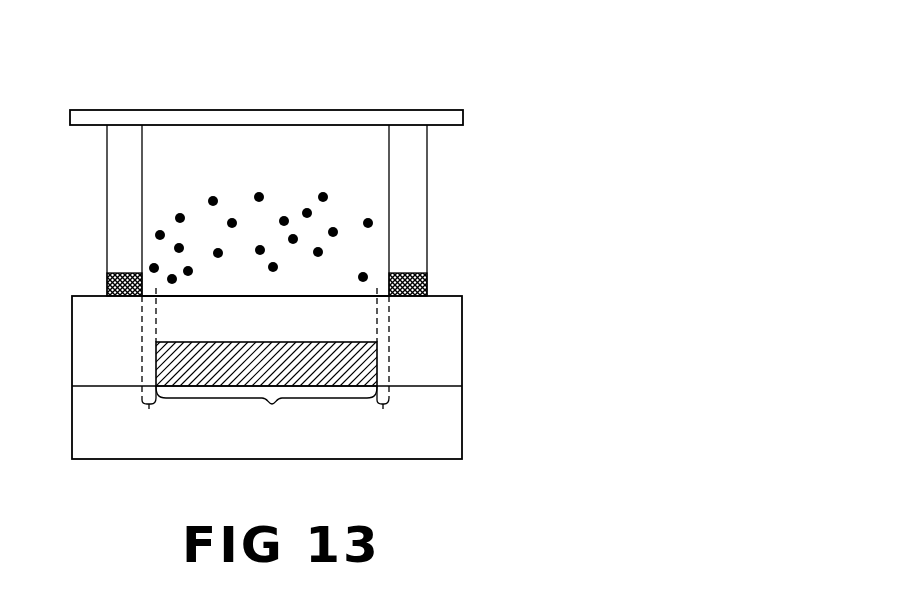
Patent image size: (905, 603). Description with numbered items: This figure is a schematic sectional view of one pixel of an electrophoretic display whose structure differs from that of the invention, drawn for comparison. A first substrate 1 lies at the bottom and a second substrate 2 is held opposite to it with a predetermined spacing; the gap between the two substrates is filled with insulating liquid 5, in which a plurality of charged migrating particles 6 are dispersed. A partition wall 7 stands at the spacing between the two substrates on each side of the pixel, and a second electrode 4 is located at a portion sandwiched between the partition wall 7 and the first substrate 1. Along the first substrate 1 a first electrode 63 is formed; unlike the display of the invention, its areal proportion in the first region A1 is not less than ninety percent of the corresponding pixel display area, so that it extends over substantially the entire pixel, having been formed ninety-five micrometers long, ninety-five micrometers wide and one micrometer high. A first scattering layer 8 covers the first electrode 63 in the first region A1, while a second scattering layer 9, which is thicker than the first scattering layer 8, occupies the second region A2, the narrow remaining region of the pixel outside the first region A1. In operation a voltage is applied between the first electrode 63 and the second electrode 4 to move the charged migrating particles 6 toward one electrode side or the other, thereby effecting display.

The first substrate 1 is at (457, 423).
The second substrate 2 is at (466, 117).
The second electrode 4 is at (108, 285).
The insulating liquid 5 is at (358, 146).
The charged migrating particles 6 is at (180, 214).
The partition wall 7 is at (112, 198).
The first scattering layer 8 is at (331, 299).
The second scattering layer 9 is at (462, 332).
The first electrode 63 is at (377, 361).
The first region A1 is at (266, 413).
The second region A2 is at (266, 418).